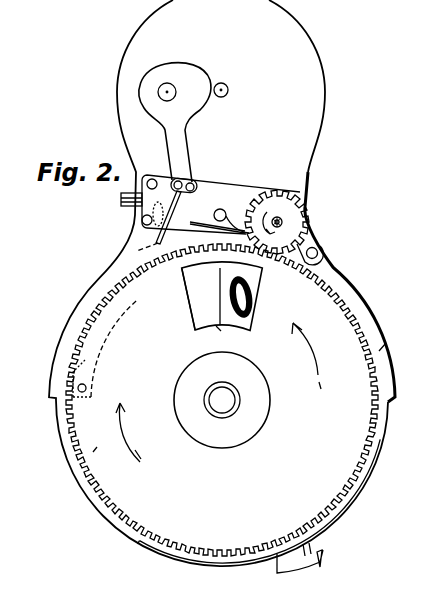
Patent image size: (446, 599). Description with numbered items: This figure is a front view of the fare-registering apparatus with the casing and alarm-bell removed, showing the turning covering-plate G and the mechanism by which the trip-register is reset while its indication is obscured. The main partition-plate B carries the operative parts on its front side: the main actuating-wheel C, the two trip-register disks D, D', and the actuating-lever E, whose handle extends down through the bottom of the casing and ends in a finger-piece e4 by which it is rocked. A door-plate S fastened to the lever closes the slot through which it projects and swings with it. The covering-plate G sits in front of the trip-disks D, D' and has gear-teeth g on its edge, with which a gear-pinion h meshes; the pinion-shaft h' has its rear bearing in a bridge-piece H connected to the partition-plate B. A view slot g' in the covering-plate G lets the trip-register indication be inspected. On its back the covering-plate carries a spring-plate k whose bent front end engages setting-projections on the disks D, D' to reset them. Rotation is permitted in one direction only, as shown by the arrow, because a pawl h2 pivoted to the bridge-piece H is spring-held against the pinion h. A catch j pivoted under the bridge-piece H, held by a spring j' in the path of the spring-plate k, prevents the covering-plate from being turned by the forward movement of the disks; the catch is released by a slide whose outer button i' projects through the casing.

The main partition-plate B is at (222, 283).
The bridge-piece H is at (232, 220).
The button or actuating end i' is at (131, 193).
The catch j is at (136, 294).
The spring j' is at (169, 214).
The pawl h2 is at (219, 216).
The gear-pinion h is at (277, 222).
The pinion-shaft h' is at (301, 204).
The main actuating-wheel C is at (222, 400).
The turning covering-plate G is at (254, 400).
The units-disk D is at (222, 296).
The tens-disk D' is at (196, 299).
The view slot g' is at (207, 337).
The gear-teeth g is at (237, 405).
The spring-plate k is at (83, 370).
The door-plate S is at (259, 501).
The actuating-lever E is at (266, 569).
The finger-piece e4 is at (320, 564).